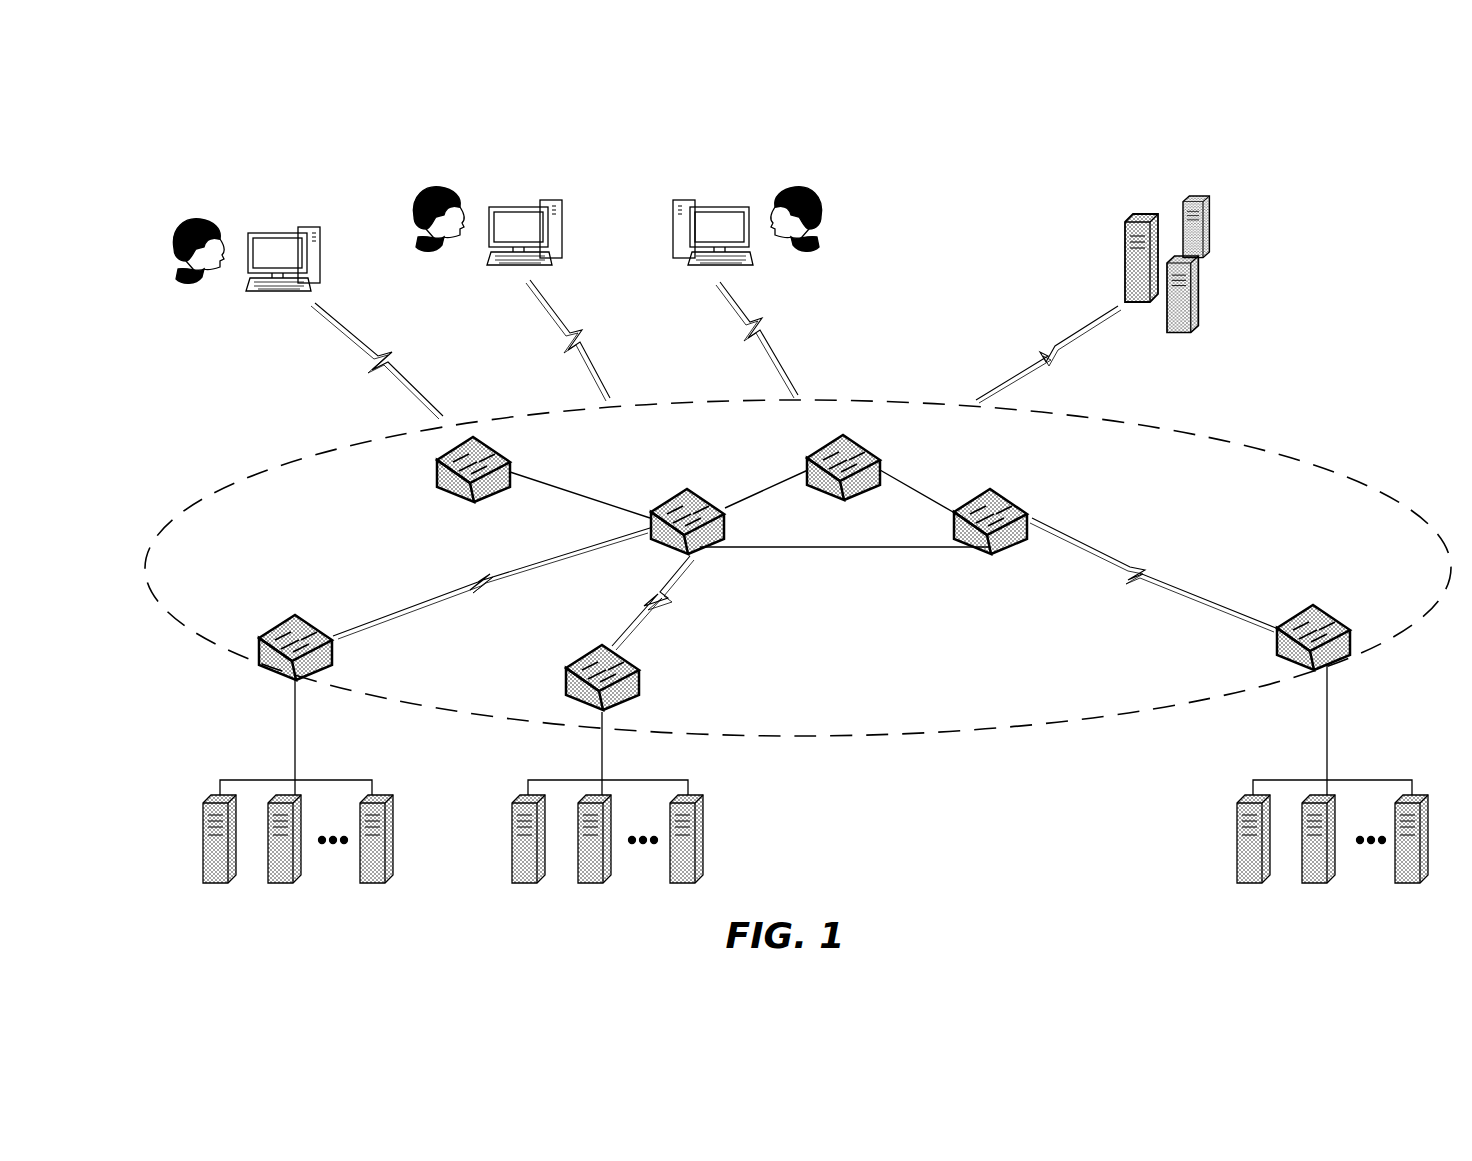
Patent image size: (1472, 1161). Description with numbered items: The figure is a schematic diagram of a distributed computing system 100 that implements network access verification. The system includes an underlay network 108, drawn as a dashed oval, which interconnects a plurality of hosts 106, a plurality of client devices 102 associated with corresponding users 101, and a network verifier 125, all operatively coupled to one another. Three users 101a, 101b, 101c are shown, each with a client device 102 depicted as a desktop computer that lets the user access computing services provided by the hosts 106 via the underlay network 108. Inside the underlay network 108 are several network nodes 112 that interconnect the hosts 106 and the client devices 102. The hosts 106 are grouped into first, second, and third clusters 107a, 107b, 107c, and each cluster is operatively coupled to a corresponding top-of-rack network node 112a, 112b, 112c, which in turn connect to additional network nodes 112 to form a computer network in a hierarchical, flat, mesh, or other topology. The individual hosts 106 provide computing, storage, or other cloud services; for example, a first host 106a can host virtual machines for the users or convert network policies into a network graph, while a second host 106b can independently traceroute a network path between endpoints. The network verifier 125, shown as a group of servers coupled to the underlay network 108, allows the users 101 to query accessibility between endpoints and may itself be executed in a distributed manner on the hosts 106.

The distributed computing system 100 is at (1292, 176).
The users 101 is at (497, 215).
The user 101a is at (150, 226).
The user 101b is at (392, 196).
The user 101c is at (842, 194).
The client device 102 is at (302, 230).
The host 106 is at (372, 803).
The first host 106a is at (207, 805).
The second host 106b is at (692, 803).
The first cluster 107a is at (756, 807).
The second cluster 107b is at (594, 818).
The third cluster 107c is at (1380, 744).
The underlay network 108 is at (797, 708).
The network node 112 is at (442, 446).
The top-of-rack network node 112a is at (275, 622).
The top-of-rack network node 112b is at (598, 652).
The top-of-rack network node 112c is at (1338, 618).
The network verifier 125 is at (1159, 292).